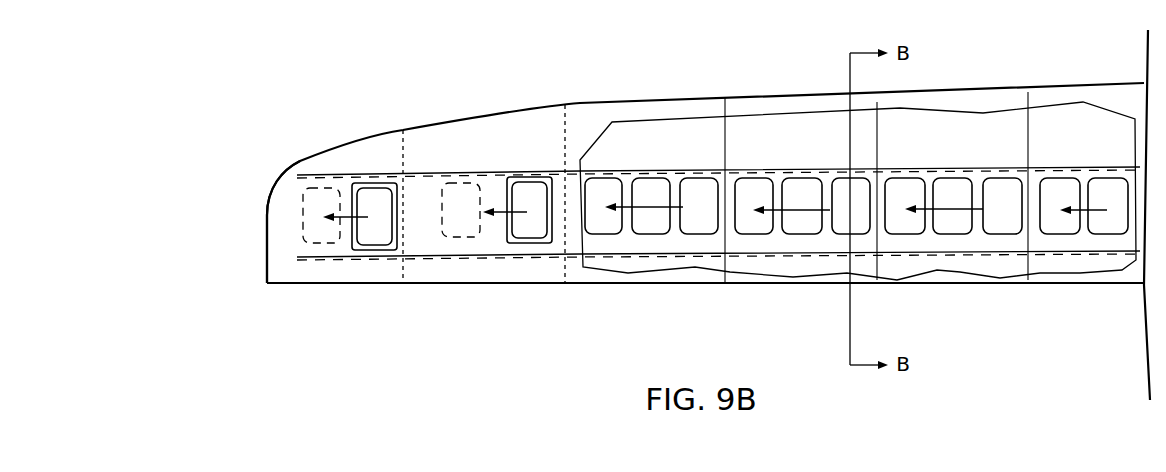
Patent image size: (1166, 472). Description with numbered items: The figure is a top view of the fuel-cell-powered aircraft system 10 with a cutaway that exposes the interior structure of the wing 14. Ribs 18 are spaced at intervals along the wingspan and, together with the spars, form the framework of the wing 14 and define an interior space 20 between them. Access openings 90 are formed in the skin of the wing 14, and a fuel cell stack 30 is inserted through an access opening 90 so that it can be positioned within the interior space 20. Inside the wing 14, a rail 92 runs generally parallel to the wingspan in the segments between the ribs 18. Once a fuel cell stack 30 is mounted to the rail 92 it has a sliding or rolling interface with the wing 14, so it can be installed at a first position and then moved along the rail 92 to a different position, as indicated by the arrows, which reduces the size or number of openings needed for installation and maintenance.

The fuel-cell-powered aircraft system 10 is at (250, 89).
The wing 14 is at (263, 227).
The ribs 18 is at (728, 143).
The interior space 20 is at (782, 156).
The fuel cell stack 30 is at (453, 223).
The access opening 90 is at (547, 243).
The rail 92 is at (602, 173).